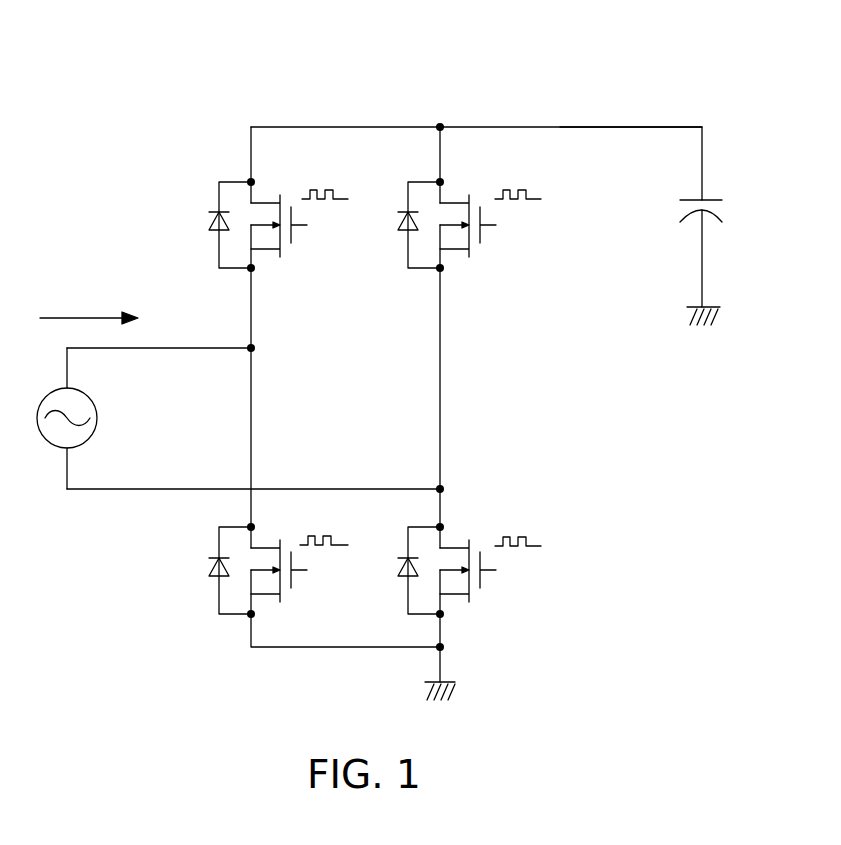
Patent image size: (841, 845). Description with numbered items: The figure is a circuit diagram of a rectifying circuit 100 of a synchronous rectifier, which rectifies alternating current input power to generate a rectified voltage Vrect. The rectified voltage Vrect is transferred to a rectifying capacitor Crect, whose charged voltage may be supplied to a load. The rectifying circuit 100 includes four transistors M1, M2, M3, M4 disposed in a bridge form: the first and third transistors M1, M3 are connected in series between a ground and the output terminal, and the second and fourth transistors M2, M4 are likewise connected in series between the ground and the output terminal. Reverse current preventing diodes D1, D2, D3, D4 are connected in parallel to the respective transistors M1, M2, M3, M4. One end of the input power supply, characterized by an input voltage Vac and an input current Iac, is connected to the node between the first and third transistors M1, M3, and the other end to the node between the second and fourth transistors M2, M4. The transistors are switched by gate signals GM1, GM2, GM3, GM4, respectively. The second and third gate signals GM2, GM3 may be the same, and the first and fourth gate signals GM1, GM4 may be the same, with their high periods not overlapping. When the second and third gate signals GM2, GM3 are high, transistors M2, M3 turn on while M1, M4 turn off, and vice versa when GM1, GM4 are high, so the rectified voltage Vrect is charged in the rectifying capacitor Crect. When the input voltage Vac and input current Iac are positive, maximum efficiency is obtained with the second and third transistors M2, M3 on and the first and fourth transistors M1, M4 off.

The rectifying circuit 100 is at (384, 37).
The first transistor M1 is at (289, 574).
The second transistor M2 is at (481, 578).
The third transistor M3 is at (290, 227).
The fourth transistor M4 is at (480, 227).
The reverse current preventing diode D1 is at (210, 570).
The reverse current preventing diode D2 is at (398, 570).
The reverse current preventing diode D3 is at (209, 225).
The reverse current preventing diode D4 is at (398, 225).
The first gate signal GM1 is at (324, 525).
The second gate signal GM2 is at (518, 526).
The third gate signal GM3 is at (325, 180).
The fourth gate signal GM4 is at (518, 180).
The input voltage Vac is at (60, 418).
The input current Iac is at (89, 307).
The rectified voltage Vrect is at (631, 113).
The rectifying capacitor Crect is at (665, 207).